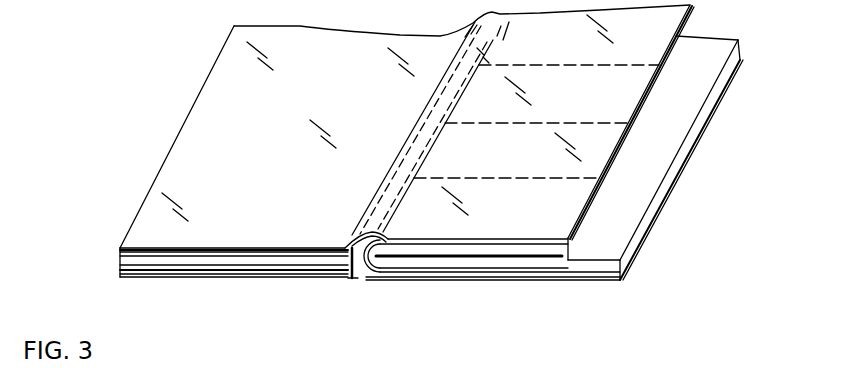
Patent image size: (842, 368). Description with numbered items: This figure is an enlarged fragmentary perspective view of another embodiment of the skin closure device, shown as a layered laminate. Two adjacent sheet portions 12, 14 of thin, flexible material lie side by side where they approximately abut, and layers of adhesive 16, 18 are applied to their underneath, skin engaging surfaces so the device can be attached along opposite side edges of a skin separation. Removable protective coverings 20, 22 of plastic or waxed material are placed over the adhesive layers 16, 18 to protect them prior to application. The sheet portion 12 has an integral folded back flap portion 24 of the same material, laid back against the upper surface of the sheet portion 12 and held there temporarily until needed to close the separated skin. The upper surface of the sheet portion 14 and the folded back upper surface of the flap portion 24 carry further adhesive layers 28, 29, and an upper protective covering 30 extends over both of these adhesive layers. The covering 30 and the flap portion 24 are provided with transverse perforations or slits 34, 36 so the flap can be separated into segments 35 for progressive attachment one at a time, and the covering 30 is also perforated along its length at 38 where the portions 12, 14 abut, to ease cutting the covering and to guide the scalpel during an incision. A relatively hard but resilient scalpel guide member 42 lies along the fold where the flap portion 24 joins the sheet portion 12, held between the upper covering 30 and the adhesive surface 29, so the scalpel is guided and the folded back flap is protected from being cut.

The sheet portion 12 is at (582, 267).
The sheet portion 14 is at (207, 263).
The adhesive layer 16 is at (457, 277).
The adhesive layer 18 is at (247, 271).
The removable protective covering 20 is at (413, 278).
The removable protective covering 22 is at (348, 277).
The folded back flap portion 24 is at (555, 250).
The adhesive layer 28 is at (200, 255).
The adhesive layer 29 is at (513, 242).
The upper protective covering 30 is at (208, 250).
The transverse perforation 34 is at (603, 65).
The segment 35 is at (620, 108).
The transverse perforation 36 is at (625, 133).
The perforations 38 is at (462, 45).
The scalpel guide member 42 is at (358, 236).